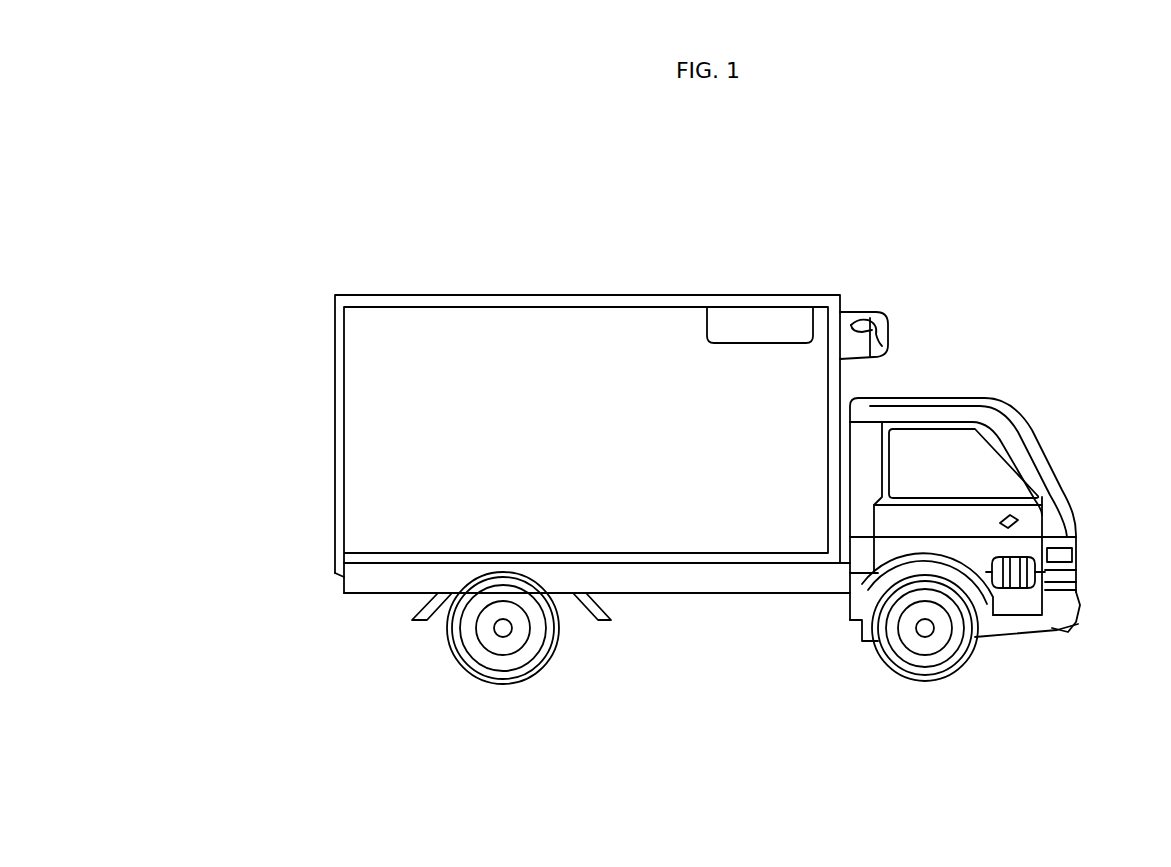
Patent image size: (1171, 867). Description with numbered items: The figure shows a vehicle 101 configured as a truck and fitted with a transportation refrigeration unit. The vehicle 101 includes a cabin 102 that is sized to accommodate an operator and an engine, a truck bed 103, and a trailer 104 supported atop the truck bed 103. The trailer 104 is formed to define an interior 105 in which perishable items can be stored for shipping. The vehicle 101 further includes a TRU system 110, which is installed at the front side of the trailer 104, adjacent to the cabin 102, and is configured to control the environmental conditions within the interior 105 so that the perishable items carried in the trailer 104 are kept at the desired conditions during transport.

The vehicle 101 is at (387, 298).
The cabin 102 is at (1058, 497).
The truck bed 103 is at (716, 564).
The trailer 104 is at (343, 426).
The interior 105 is at (570, 447).
The TRU system 110 is at (884, 320).